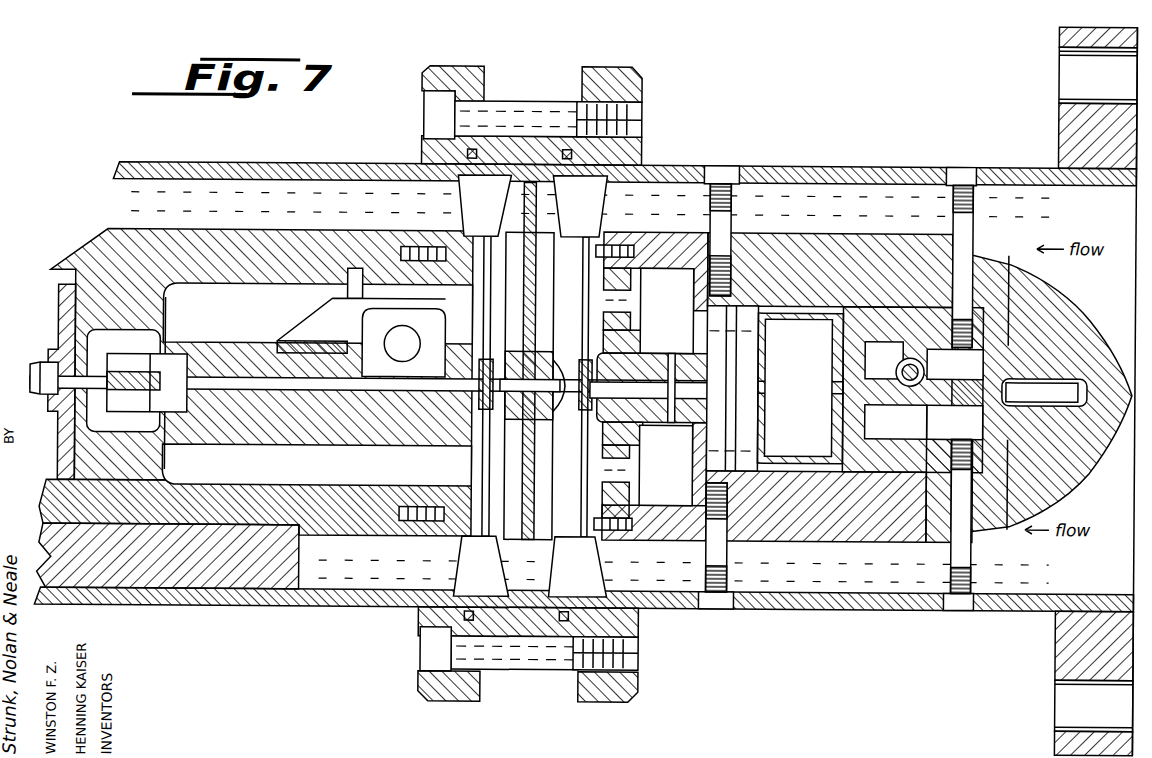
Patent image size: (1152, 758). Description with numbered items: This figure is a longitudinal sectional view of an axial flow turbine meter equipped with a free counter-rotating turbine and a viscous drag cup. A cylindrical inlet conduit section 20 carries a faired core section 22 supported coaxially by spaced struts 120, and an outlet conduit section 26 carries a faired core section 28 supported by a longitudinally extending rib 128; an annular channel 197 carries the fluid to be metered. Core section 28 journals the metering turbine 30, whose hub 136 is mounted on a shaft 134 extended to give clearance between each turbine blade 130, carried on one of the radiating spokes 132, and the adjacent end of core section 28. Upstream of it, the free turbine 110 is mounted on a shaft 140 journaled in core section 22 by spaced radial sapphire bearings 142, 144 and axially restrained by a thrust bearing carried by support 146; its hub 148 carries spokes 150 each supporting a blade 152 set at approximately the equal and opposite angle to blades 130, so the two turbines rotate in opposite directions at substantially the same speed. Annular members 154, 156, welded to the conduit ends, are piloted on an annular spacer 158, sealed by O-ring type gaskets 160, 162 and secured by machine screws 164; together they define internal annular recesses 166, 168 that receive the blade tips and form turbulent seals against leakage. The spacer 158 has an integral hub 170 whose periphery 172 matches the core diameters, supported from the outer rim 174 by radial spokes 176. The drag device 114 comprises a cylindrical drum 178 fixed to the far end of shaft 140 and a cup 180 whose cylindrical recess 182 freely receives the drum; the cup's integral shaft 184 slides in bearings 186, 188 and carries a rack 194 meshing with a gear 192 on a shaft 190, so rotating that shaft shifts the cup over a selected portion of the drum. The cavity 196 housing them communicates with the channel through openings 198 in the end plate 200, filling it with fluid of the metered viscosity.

The cylindrical inlet conduit section 20 is at (893, 167).
The faired core section 22 is at (1033, 292).
The outlet conduit section 26 is at (322, 165).
The faired core section 28 is at (257, 232).
The metering turbine 30 is at (448, 557).
The free turbine 110 is at (584, 301).
The drag device 114 is at (748, 318).
The struts 120 is at (730, 223).
The rib 128 is at (305, 556).
The turbine blade 130 is at (476, 240).
The radiating spokes 132 is at (486, 466).
The shaft 134 is at (395, 380).
The hub 136 is at (486, 345).
The shaft 140 is at (640, 409).
The radial sapphire bearing 142 is at (695, 387).
The radial sapphire bearing 144 is at (655, 388).
The support 146 is at (560, 414).
The hub 148 is at (651, 351).
The spokes 150 is at (580, 322).
The blade 152 is at (575, 545).
The annular member 154 is at (445, 70).
The annular member 156 is at (630, 86).
The annular spacer 158 is at (512, 130).
The O-ring type gasket 160 is at (572, 155).
The O-ring type gasket 162 is at (477, 155).
The machine screws 164 is at (553, 102).
The internal annular recess 166 is at (484, 205).
The internal annular recess 168 is at (580, 206).
The hub 170 is at (508, 500).
The periphery 172 is at (525, 548).
The outer rim 174 is at (538, 650).
The radial spokes 176 is at (537, 213).
The cylindrical drum 178 is at (760, 465).
The cup 180 is at (800, 465).
The cylindrical recess 182 is at (830, 465).
The shaft 184 is at (898, 406).
The bearing 186 is at (983, 364).
The bearing 188 is at (835, 386).
The shaft 190 is at (912, 355).
The gear 192 is at (888, 325).
The rack 194 is at (885, 372).
The cavity 196 is at (658, 505).
The annular channel 197 is at (930, 569).
The openings 198 is at (636, 314).
The end plate 200 is at (638, 458).